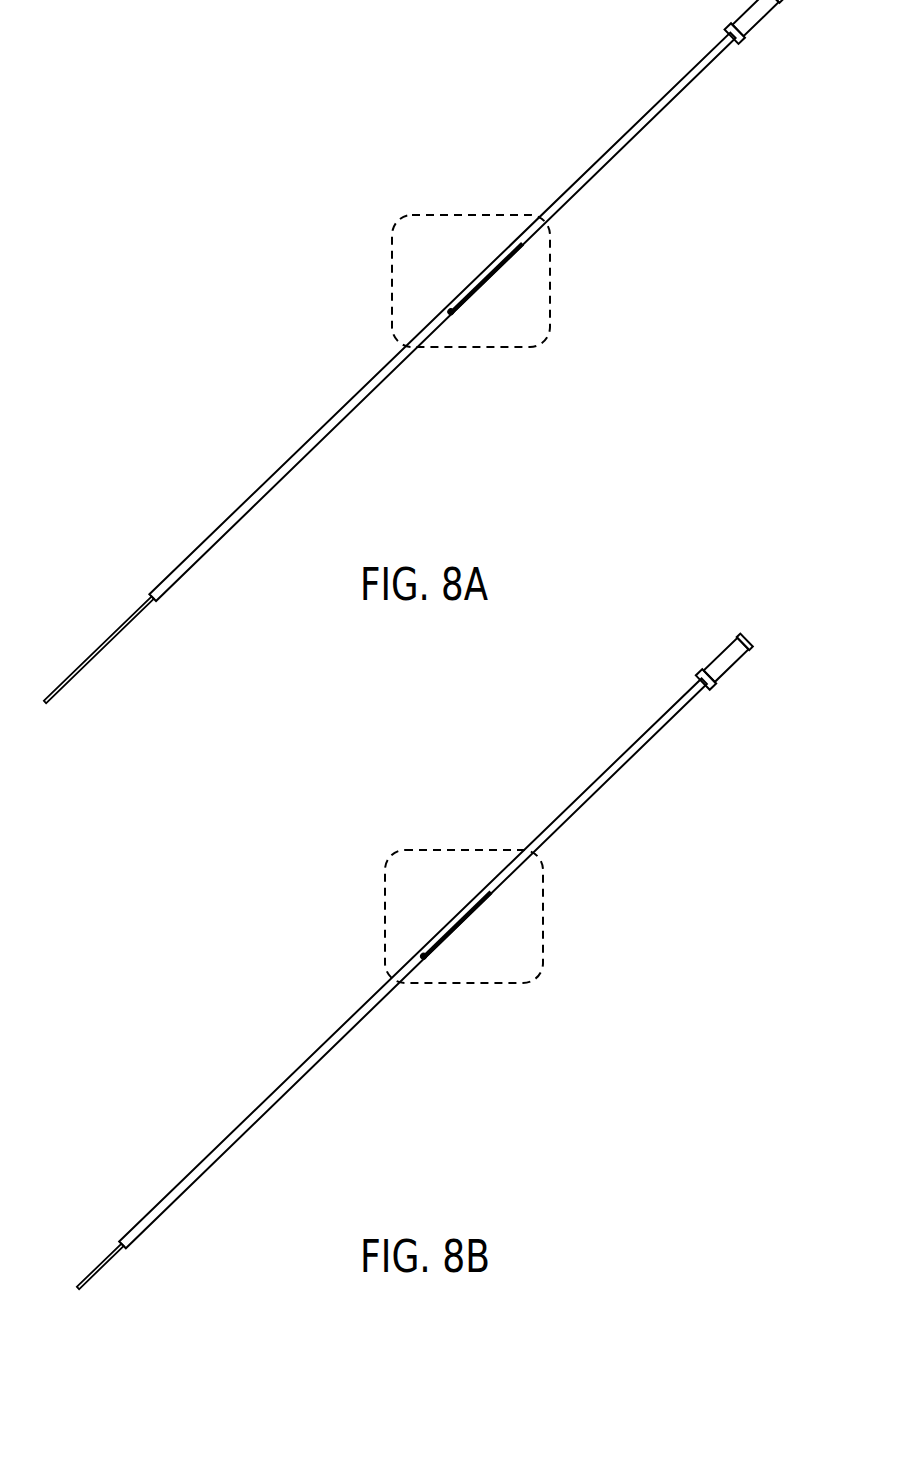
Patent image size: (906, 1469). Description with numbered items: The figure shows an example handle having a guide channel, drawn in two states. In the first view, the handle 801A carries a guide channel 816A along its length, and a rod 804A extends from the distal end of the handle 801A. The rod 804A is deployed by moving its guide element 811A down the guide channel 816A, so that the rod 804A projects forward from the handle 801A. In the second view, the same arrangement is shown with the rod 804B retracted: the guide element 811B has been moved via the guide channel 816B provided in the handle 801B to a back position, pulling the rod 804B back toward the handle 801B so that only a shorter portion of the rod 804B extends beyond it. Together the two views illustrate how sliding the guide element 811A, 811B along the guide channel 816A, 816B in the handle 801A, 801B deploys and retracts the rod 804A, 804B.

In FIG. 8A, the handle 801A is at (212, 542).
In FIG. 8A, the rod 804A is at (108, 645).
In FIG. 8A, the guide element 811A is at (452, 307).
In FIG. 8A, the guide channel 816A is at (505, 268).
In FIG. 8B, the handle 801B is at (182, 1188).
In FIG. 8B, the rod 804B is at (97, 1270).
In FIG. 8B, the guide element 811B is at (490, 892).
In FIG. 8B, the guide channel 816B is at (445, 940).